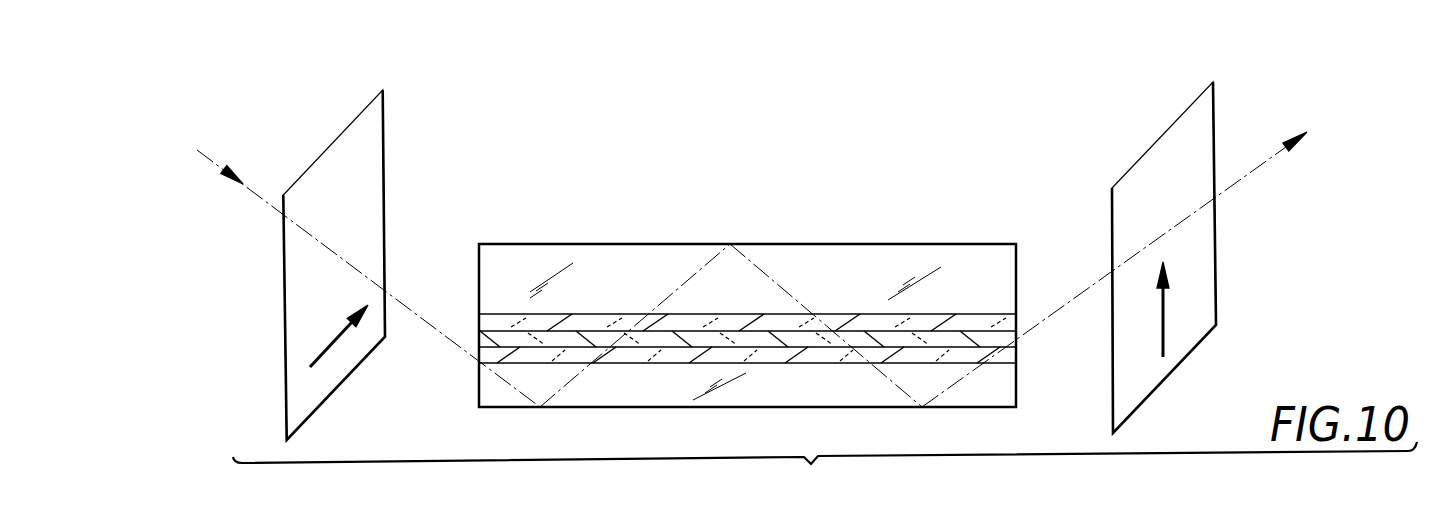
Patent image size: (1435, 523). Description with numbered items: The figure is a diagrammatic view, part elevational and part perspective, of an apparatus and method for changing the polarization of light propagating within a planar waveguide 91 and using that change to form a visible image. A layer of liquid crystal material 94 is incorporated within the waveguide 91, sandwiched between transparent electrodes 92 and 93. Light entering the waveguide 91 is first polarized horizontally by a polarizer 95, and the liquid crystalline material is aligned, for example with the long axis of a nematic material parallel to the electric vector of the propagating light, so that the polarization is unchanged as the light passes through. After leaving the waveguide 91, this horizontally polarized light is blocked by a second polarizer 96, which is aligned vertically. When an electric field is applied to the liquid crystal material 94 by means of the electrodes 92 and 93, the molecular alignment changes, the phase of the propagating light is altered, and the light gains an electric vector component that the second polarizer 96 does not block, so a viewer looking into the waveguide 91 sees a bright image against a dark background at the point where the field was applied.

The waveguide 91 is at (1037, 160).
The transparent electrode 92 is at (1018, 315).
The transparent electrode 93 is at (1017, 348).
The layer of liquid crystal material 94 is at (1017, 330).
The polarizer 95 is at (327, 142).
The second polarizer 96 is at (1162, 130).